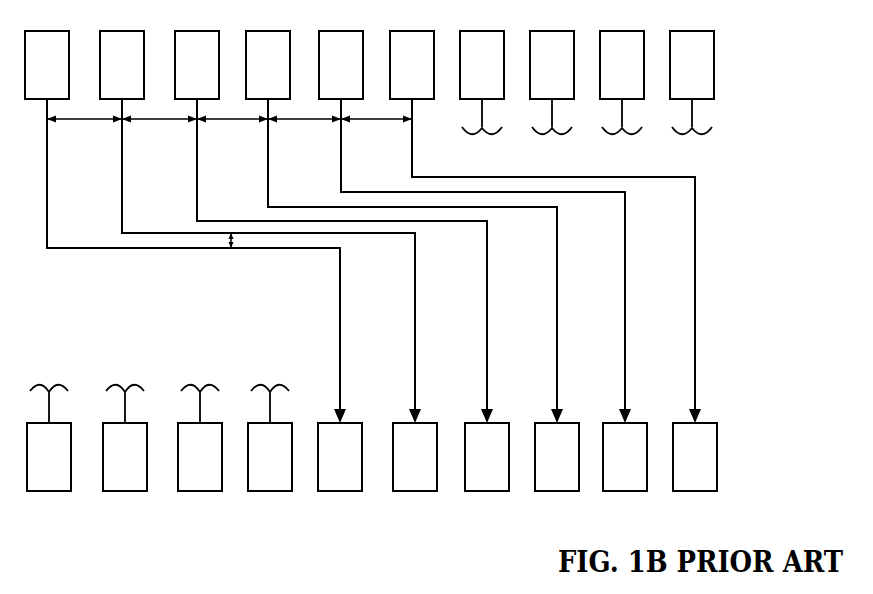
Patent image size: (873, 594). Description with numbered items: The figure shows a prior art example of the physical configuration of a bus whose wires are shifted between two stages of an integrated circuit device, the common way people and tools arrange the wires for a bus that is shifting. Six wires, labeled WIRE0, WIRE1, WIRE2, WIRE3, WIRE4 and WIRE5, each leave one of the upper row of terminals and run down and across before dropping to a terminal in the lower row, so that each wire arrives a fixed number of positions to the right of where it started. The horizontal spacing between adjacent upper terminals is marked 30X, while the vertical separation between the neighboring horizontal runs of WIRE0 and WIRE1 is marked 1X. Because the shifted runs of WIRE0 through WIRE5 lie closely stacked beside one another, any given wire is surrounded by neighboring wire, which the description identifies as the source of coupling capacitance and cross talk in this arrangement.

The wire 0 WIRE0 is at (196, 261).
The wire 1 WIRE1 is at (271, 261).
The wire 2 WIRE2 is at (345, 261).
The wire 3 WIRE3 is at (415, 261).
The wire 4 WIRE4 is at (486, 261).
The wire 5 WIRE5 is at (556, 261).
The pitch of 30X is at (229, 135).
The spacing of 1X is at (232, 249).